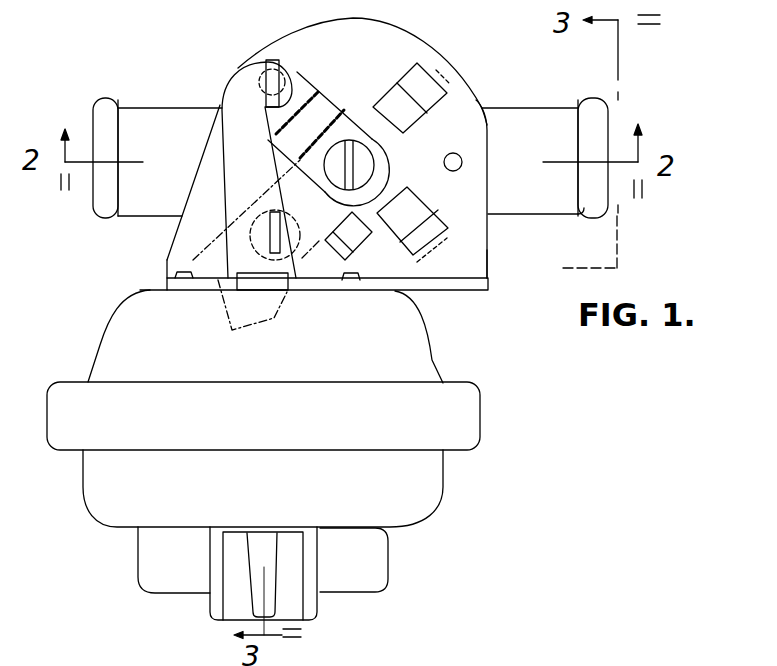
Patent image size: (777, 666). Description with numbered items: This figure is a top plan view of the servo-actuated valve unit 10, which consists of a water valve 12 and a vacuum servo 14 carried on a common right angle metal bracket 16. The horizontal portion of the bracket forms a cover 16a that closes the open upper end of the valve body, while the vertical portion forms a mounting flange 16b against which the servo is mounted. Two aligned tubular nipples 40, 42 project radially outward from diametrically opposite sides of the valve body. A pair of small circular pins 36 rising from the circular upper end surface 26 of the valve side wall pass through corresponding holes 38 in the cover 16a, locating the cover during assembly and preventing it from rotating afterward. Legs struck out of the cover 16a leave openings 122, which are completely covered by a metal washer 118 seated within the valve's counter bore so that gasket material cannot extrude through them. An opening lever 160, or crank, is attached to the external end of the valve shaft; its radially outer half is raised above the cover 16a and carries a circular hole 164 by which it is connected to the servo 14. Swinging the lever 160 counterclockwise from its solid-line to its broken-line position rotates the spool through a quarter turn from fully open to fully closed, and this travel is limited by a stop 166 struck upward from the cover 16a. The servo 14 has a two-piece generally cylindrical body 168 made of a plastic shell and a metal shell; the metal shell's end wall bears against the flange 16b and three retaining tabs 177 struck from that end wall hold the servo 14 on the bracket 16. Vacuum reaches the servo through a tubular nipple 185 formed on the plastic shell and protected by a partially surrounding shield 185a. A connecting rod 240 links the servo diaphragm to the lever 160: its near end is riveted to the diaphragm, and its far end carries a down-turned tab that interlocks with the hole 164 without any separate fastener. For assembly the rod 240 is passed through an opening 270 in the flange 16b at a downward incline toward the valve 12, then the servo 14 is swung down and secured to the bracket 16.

The servo-actuated valve unit 10 is at (515, 363).
The water valve 12 is at (534, 103).
The vacuum servo 14 is at (483, 430).
The right angle metal bracket 16 is at (490, 291).
The cover 16a is at (545, 217).
The mounting flange 16b is at (563, 268).
The upper end surface 26 is at (418, 64).
The circular pins 36 is at (480, 107).
The holes 38 is at (462, 160).
The nipple 40 is at (558, 220).
The nipple 42 is at (143, 108).
The metal washer 118 is at (407, 186).
The openings 122 is at (398, 146).
The opening lever 160 is at (328, 73).
The circular hole 164 is at (300, 70).
The stop 166 is at (348, 259).
The servo body 168 is at (437, 512).
The retaining tabs 177 is at (187, 272).
The tubular nipple 185 is at (280, 577).
The shield 185a is at (320, 605).
The connecting rod 240 is at (221, 162).
The opening 270 is at (217, 293).